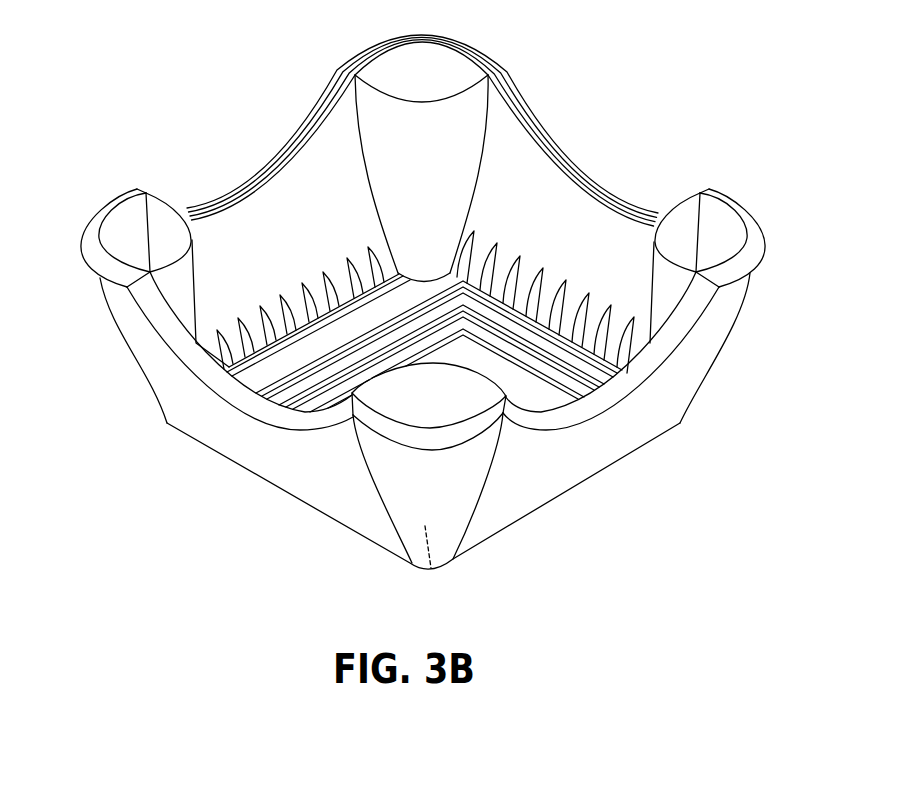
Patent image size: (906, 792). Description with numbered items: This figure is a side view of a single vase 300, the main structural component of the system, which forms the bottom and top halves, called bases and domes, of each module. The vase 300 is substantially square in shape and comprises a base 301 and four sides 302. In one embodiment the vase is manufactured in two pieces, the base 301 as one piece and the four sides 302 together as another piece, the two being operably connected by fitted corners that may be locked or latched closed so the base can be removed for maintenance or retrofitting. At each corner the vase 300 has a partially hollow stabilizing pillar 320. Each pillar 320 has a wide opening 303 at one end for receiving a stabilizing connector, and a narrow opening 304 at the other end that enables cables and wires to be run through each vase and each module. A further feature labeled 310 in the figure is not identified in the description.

The vase 300 is at (386, 592).
The base 301 is at (463, 332).
The sides 302 is at (243, 237).
The wide opening 303 is at (716, 220).
The narrow opening 304 is at (431, 571).
The top rim band 310 is at (283, 155).
The stabilizing pillars 320 is at (128, 237).